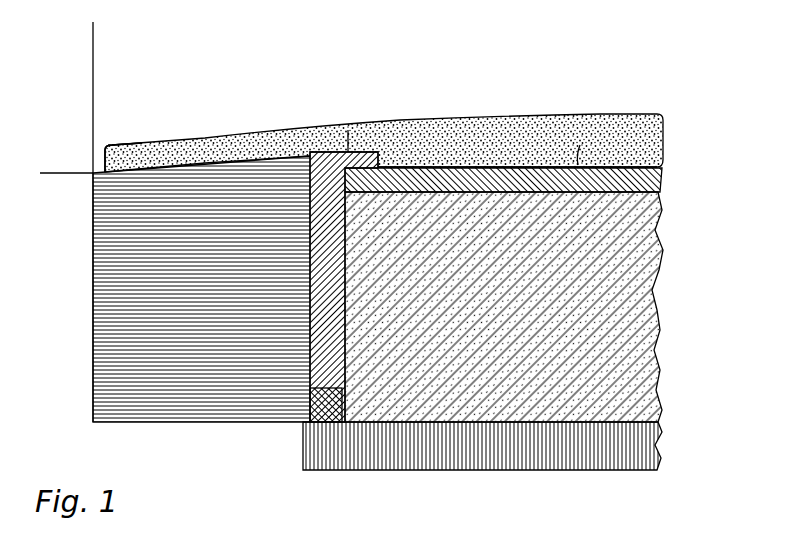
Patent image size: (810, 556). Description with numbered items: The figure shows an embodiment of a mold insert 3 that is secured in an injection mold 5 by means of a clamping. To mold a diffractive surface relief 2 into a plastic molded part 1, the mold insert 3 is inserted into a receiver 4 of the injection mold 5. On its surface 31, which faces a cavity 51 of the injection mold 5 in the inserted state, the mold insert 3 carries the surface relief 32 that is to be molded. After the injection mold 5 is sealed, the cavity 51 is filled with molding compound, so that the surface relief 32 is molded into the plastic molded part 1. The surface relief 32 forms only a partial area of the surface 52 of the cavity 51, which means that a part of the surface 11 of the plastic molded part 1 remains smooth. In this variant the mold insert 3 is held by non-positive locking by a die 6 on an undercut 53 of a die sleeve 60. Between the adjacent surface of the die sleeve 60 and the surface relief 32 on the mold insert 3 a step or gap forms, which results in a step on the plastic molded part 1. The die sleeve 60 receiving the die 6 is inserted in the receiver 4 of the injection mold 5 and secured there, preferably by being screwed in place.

The plastic molded part 1 is at (664, 136).
The diffractive surface relief 2 is at (525, 166).
The mold insert 3 is at (650, 176).
The receiver 4 is at (622, 414).
The injection mold 5 is at (86, 424).
The die 6 is at (620, 332).
The surface of the plastic molded part 11 is at (142, 143).
The surface of the mold insert 31 is at (400, 152).
The surface relief 32 is at (578, 165).
The cavity 51 is at (489, 53).
The surface of the cavity 52 is at (142, 143).
The undercut 53 is at (348, 130).
The die sleeve 60 is at (315, 392).